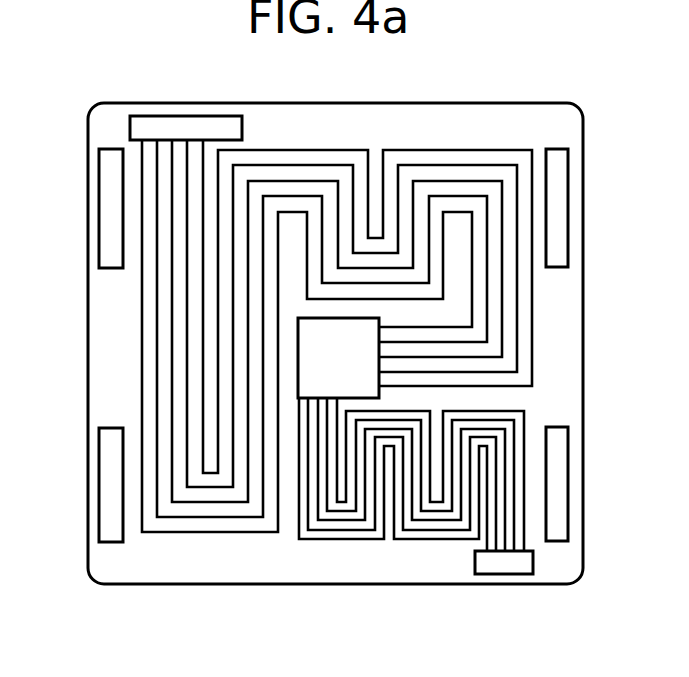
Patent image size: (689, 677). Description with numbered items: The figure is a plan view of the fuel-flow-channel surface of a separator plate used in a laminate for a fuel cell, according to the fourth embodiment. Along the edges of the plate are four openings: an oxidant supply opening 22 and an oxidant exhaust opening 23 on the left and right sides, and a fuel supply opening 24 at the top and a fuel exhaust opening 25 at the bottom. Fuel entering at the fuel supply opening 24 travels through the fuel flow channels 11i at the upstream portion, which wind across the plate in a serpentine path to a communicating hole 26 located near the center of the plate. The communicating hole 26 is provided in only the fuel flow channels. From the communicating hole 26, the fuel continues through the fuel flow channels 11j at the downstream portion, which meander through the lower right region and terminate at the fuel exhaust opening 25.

The fuel flow channels at an upstream portion 11i is at (148, 335).
The fuel flow channels at a downstream portion 11j is at (413, 533).
The oxidant supply opening 22 is at (111, 177).
The oxidant exhaust opening 23 is at (558, 485).
The fuel supply opening 24 is at (216, 126).
The fuel exhaust opening 25 is at (504, 564).
The communicating hole 26 is at (360, 357).